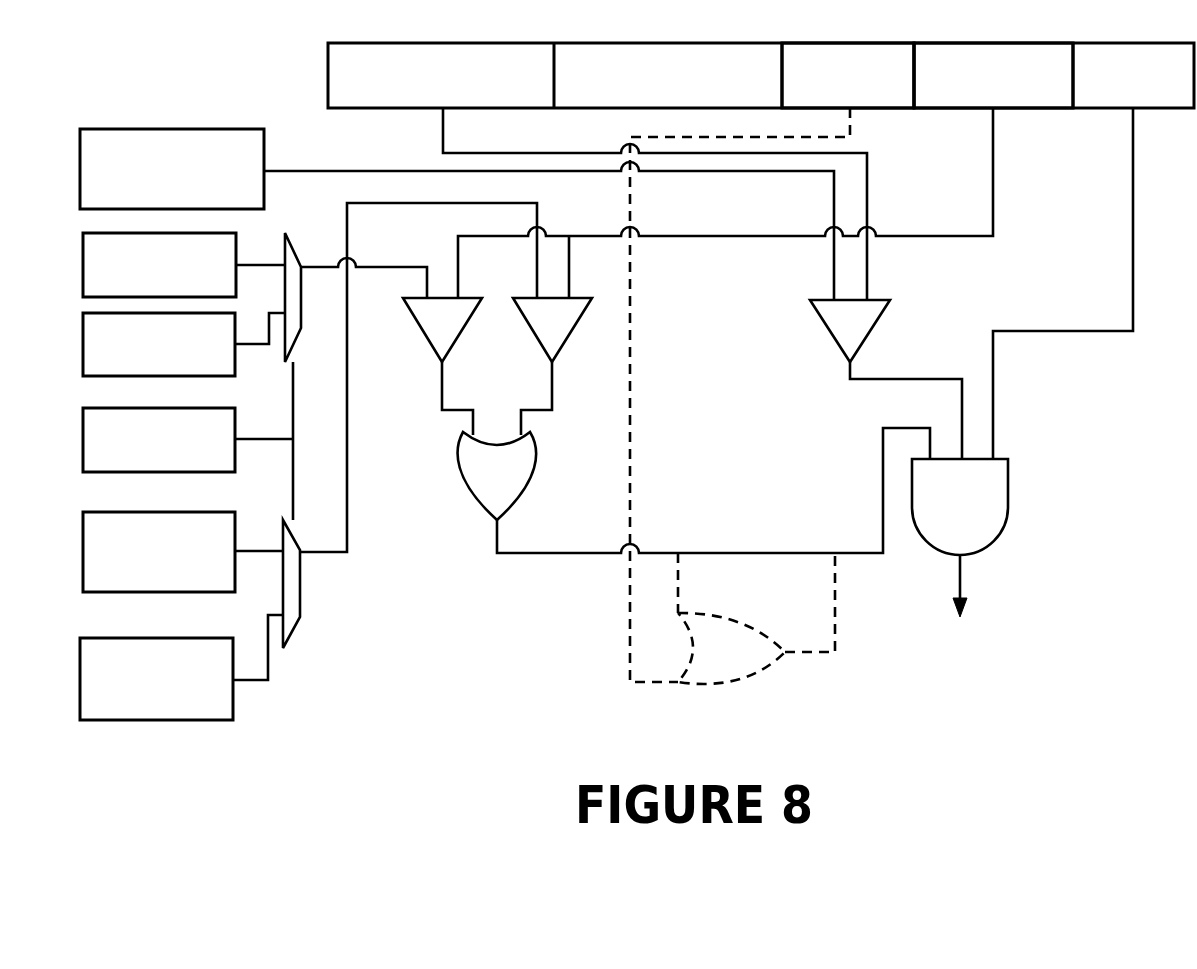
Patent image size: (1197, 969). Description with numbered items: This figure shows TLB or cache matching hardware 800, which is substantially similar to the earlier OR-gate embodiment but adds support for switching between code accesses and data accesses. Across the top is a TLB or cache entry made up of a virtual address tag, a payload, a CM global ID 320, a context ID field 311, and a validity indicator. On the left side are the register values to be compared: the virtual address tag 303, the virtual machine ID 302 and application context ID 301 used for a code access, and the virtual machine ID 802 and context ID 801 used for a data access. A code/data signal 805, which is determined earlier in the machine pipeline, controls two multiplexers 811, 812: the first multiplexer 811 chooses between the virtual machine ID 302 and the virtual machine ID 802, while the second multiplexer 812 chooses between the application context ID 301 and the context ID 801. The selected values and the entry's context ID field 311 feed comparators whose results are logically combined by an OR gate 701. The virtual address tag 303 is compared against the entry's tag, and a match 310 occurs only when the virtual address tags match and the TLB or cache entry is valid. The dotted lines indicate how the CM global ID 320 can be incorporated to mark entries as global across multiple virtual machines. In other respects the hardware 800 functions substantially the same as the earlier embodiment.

The TLB or cache matching hardware 800 is at (173, 34).
The CM global ID 320 is at (869, 98).
The context ID field 311 is at (1011, 98).
The virtual address tag 303 is at (155, 203).
The virtual machine ID field 302 is at (142, 287).
The virtual machine ID 802 is at (141, 370).
The code/data signal 805 is at (141, 465).
The application context ID field 301 is at (141, 586).
The context ID 801 is at (138, 715).
The multiplexer 811 is at (296, 253).
The multiplexer 812 is at (300, 583).
The OR gate 701 is at (478, 508).
The match 310 is at (960, 564).